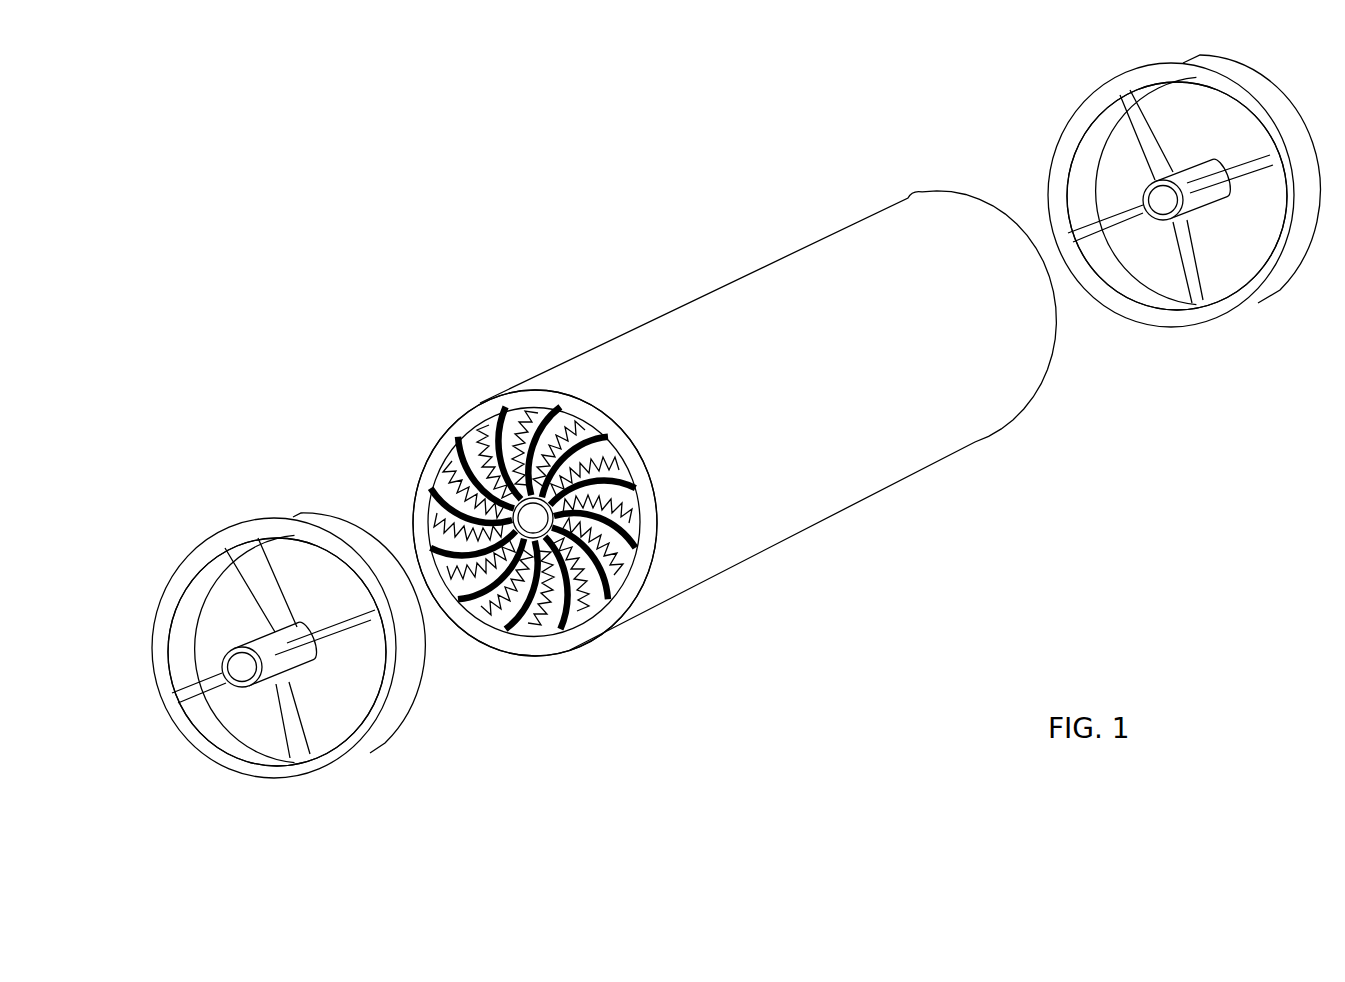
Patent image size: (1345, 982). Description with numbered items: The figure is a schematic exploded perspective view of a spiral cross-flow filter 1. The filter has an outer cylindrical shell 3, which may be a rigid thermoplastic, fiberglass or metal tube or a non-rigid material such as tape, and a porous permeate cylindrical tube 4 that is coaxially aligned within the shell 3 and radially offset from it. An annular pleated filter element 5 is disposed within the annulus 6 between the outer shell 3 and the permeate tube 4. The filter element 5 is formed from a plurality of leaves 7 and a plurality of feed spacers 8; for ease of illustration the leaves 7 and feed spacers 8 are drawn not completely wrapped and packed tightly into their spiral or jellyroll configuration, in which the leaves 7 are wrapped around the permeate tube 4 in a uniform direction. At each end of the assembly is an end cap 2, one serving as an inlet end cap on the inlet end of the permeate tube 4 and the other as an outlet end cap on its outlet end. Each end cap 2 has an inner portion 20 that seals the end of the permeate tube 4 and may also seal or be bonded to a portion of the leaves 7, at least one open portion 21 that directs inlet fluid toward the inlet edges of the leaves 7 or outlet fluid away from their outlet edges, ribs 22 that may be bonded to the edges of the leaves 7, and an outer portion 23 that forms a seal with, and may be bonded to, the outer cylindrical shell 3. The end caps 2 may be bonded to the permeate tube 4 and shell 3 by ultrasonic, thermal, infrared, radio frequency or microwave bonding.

The spiral cross-flow filter 1 is at (669, 183).
The end cap 2 is at (220, 475).
The outer cylindrical shell 3 is at (805, 298).
The porous permeate cylindrical tube 4 is at (545, 538).
The annular pleated filter element 5 is at (500, 643).
The annulus 6 is at (543, 410).
The leaves 7 is at (616, 592).
The feed spacers 8 is at (440, 480).
The inner portion 20 is at (293, 662).
The open portion 21 is at (284, 568).
The ribs 22 is at (313, 740).
The outer portion 23 is at (203, 746).